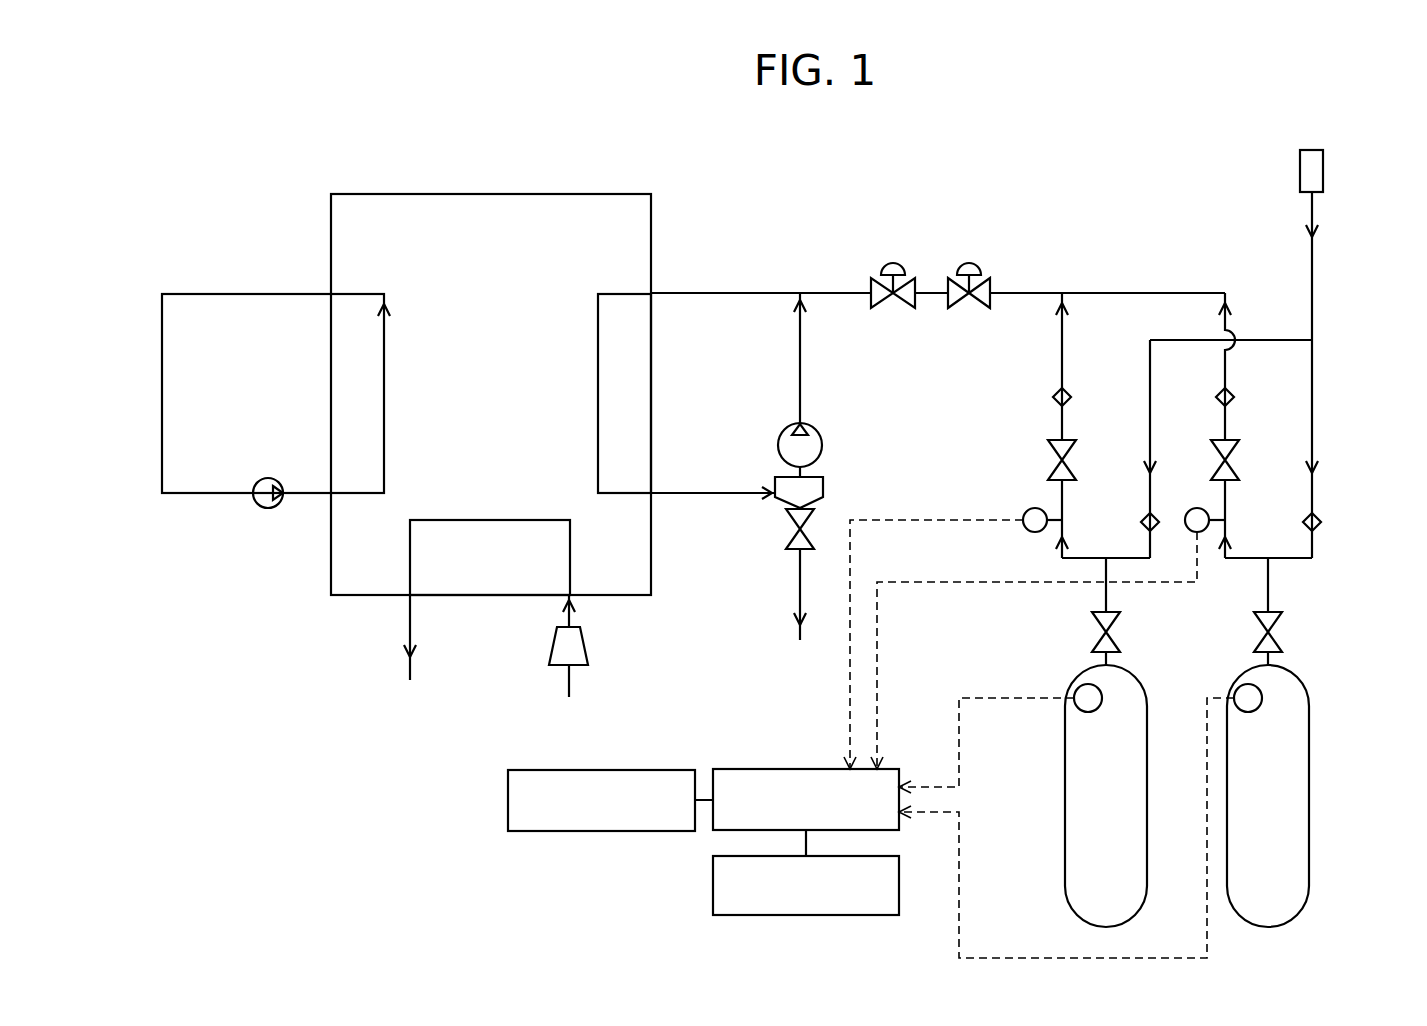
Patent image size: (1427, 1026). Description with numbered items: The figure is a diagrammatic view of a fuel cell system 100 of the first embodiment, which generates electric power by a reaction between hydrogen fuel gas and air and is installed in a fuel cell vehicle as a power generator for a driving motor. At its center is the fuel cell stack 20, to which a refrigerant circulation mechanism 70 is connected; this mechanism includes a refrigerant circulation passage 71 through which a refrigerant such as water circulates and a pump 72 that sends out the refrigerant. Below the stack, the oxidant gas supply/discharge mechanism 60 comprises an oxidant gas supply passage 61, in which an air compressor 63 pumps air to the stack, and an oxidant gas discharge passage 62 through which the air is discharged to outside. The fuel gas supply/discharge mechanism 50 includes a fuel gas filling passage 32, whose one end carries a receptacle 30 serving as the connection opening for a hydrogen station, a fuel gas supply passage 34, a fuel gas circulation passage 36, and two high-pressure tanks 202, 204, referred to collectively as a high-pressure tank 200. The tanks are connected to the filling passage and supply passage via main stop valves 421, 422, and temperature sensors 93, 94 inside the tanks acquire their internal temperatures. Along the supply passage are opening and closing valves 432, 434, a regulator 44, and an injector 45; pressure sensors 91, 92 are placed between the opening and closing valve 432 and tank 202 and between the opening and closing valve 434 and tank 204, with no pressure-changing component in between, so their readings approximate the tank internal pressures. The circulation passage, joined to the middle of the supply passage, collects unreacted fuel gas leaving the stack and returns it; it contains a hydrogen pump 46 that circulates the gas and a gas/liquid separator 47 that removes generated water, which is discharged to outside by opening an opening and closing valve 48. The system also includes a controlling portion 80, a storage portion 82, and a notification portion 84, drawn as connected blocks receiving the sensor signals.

The fuel cell system 100 is at (317, 130).
The fuel cell stack 20 is at (488, 194).
The refrigerant circulation mechanism 70 is at (192, 228).
The refrigerant circulation passage 71 is at (208, 294).
The pump 72 is at (268, 472).
The oxidant gas supply/discharge mechanism 60 is at (343, 772).
The oxidant gas supply passage 61 is at (569, 687).
The oxidant gas discharge passage 62 is at (400, 632).
The air compressor 63 is at (588, 650).
The fuel gas supply/discharge mechanism 50 is at (762, 180).
The receptacle 30 is at (1323, 170).
The fuel gas filling passage 32 is at (1312, 287).
The fuel gas supply passage 34 is at (1062, 350).
The fuel gas circulation passage 36 is at (798, 413).
The regulator 44 is at (990, 283).
The injector 45 is at (915, 283).
The hydrogen pump 46 is at (822, 435).
The gas/liquid separator 47 is at (825, 482).
The opening and closing valve 48 is at (815, 525).
The opening and closing valve 434 is at (1052, 457).
The opening and closing valve 432 is at (1235, 457).
The main stop valve 422 is at (1115, 640).
The main stop valve 421 is at (1278, 640).
The pressure sensor 92 is at (1027, 510).
The pressure sensor 91 is at (1195, 508).
The temperature sensor 94 is at (1078, 683).
The temperature sensor 93 is at (1240, 683).
The high-pressure tank 200 is at (1196, 809).
The high-pressure tank 202 is at (1300, 890).
The high-pressure tank 204 is at (1080, 920).
The controlling portion 80 is at (815, 768).
The storage portion 82 is at (798, 916).
The notification portion 84 is at (648, 832).